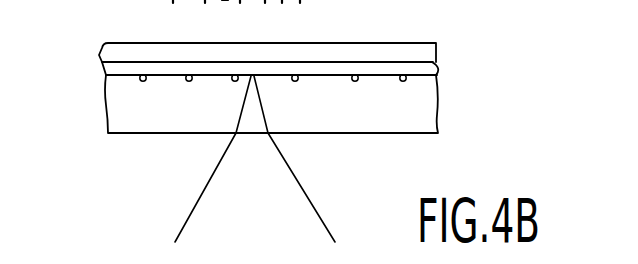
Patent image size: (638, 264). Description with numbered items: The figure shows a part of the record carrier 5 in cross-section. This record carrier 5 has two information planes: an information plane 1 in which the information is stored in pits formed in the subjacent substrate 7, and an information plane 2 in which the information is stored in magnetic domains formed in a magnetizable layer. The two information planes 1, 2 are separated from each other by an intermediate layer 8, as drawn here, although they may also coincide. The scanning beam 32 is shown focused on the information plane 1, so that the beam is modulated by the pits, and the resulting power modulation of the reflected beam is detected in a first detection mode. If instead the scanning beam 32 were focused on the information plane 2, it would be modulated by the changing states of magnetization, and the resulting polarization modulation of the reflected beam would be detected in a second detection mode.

The record carrier 5 is at (68, 58).
The information plane 2 is at (437, 52).
The intermediate layer 8 is at (432, 67).
The information plane 1 is at (437, 78).
The substrate 7 is at (418, 115).
The scanning beam 32 is at (298, 177).